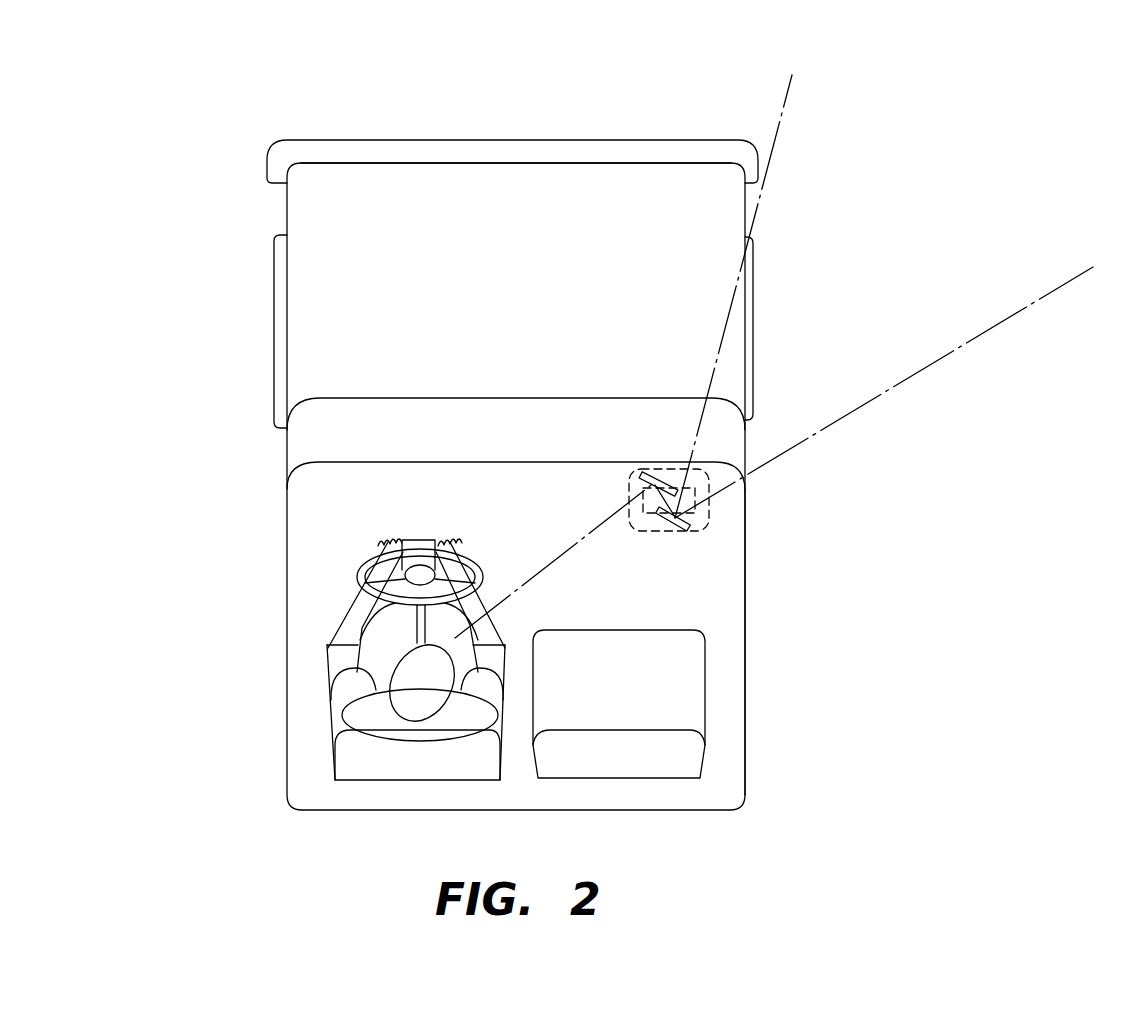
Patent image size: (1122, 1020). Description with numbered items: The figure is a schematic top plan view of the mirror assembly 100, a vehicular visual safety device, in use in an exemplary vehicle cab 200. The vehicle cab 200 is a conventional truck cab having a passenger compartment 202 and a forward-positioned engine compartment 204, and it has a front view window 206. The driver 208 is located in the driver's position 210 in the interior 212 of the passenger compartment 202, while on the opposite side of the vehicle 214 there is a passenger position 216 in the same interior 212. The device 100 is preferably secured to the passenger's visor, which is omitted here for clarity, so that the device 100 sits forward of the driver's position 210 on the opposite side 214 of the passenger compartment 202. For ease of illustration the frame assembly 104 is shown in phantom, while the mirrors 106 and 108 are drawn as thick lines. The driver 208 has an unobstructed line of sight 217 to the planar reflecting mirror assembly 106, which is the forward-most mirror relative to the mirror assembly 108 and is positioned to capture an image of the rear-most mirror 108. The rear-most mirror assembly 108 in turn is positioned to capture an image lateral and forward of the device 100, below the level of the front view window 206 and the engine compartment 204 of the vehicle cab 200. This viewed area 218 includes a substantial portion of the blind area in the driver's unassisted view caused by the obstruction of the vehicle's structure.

The mirror assembly 100 is at (620, 480).
The frame assembly 104 is at (630, 497).
The planar reflecting mirror assembly 106 is at (655, 472).
The rear-most mirror assembly 108 is at (677, 522).
The vehicle cab 200 is at (922, 774).
The passenger compartment 202 is at (280, 586).
The engine compartment 204 is at (328, 237).
The front view window 206 is at (308, 448).
The driver 208 is at (337, 671).
The driver's position 210 is at (318, 757).
The interior 212 is at (305, 505).
The opposite side of the vehicle 214 is at (747, 666).
The passenger position 216 is at (724, 772).
The line of sight 217 is at (570, 562).
The viewed area 218 is at (903, 259).